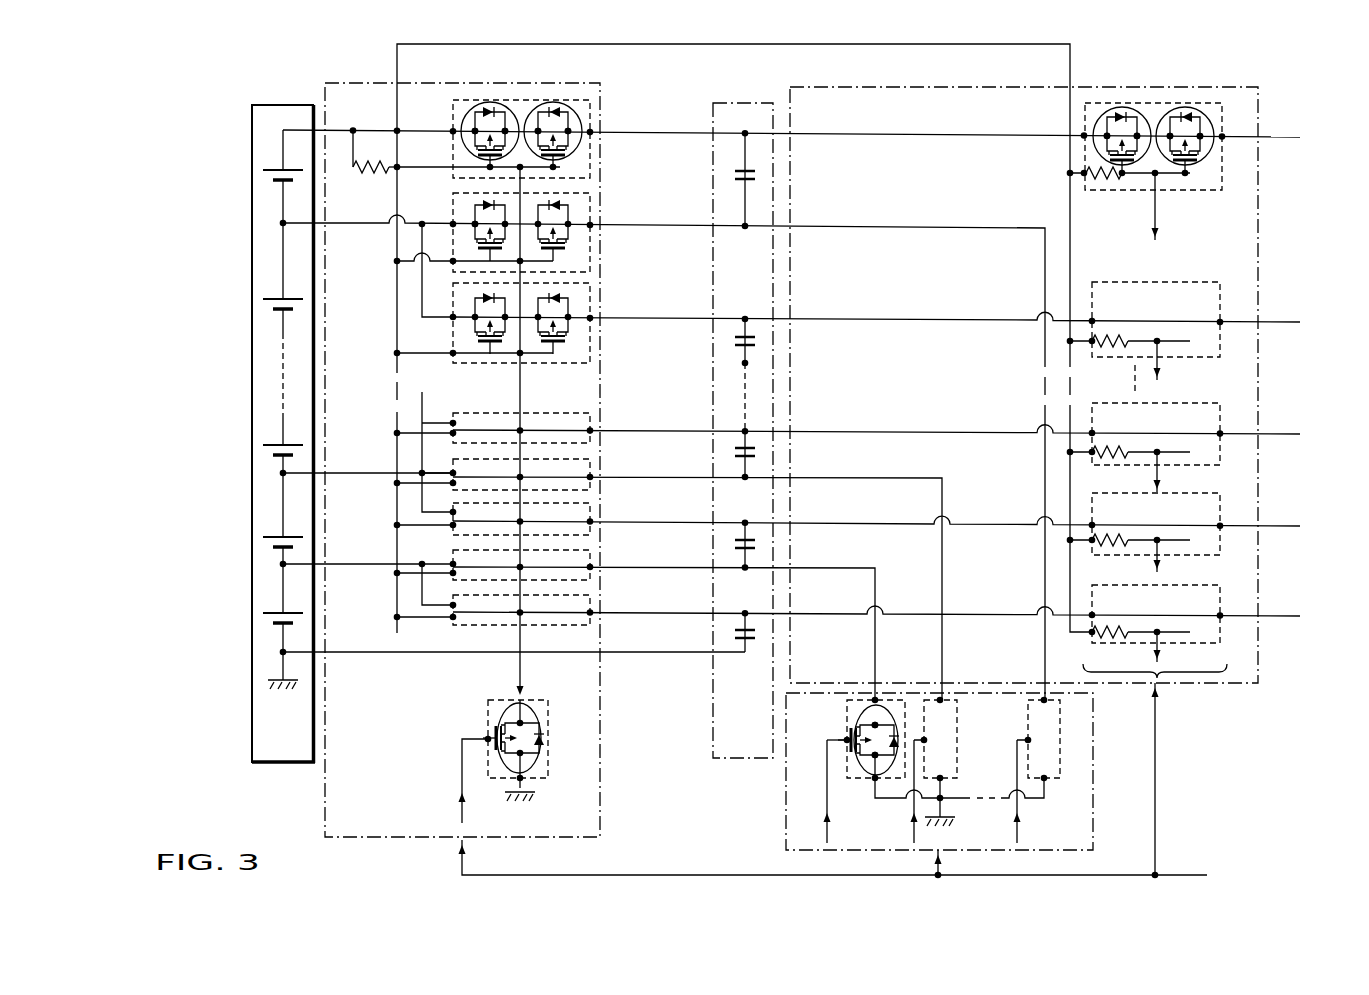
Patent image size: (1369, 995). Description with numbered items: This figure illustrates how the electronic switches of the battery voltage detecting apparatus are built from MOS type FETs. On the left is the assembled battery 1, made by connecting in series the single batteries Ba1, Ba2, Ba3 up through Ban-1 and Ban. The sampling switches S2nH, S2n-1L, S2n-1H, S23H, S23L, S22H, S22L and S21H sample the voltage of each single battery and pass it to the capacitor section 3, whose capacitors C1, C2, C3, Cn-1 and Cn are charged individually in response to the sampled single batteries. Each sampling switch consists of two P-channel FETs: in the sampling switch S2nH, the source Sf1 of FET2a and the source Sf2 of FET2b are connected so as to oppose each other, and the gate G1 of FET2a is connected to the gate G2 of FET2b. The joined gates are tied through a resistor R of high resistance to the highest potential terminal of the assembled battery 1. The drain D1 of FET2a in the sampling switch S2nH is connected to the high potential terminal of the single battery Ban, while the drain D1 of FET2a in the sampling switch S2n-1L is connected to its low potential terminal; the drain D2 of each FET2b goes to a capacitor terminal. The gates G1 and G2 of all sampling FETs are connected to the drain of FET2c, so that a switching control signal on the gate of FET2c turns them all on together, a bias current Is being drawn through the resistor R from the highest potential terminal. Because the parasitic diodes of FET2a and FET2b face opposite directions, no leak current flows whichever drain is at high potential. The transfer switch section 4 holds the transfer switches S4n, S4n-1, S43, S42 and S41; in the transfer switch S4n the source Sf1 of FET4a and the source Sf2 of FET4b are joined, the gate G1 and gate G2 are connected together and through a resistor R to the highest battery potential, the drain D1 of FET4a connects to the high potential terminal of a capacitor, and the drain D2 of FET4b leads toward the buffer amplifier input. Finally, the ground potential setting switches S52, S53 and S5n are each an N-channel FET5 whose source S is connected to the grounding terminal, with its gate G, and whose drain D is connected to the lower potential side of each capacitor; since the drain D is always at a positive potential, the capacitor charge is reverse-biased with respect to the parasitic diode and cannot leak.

The assembled battery 1 is at (250, 404).
The capacitor section 3 is at (748, 103).
The transfer switch section 4 is at (1260, 238).
The single battery Ban is at (262, 176).
The single battery Ban-1 is at (265, 304).
The single battery Ba3 is at (262, 451).
The single battery Ba2 is at (262, 543).
The single battery Ba1 is at (262, 618).
The sampling switch S2nH is at (590, 156).
The sampling switch S2n-1L is at (590, 248).
The sampling switch S2n-1H is at (590, 341).
The sampling switch S23H is at (590, 414).
The sampling switch S23L is at (590, 460).
The sampling switch S22H is at (590, 504).
The sampling switch S22L is at (590, 551).
The sampling switch S21H is at (590, 596).
The P-channel MOS type FET FET2a is at (468, 106).
The P-channel MOS type FET FET2b is at (578, 108).
The FET FET2c is at (488, 717).
The source electrode Sf1 is at (508, 126).
The source electrode Sf2 is at (540, 126).
The drain electrode D1 is at (470, 131).
The drain electrode D2 is at (583, 126).
The gate electrode G1 is at (488, 170).
The gate electrode G2 is at (556, 170).
The resistor R is at (384, 163).
The bias current Is is at (525, 673).
The capacitor Cn is at (735, 176).
The capacitor Cn-1 is at (735, 347).
The capacitor C3 is at (735, 454).
The capacitor C2 is at (735, 542).
The capacitor C1 is at (735, 632).
The transfer switch S4n is at (1222, 158).
The transfer switch S4n-1 is at (1220, 349).
The transfer switch S43 is at (1220, 460).
The transfer switch S42 is at (1220, 549).
The transfer switch S41 is at (1220, 639).
The P-channel MOS type FET FET4a is at (1100, 112).
The P-channel MOS type FET FET4b is at (1208, 112).
The N-channel MOS type FET FET5 is at (847, 772).
The drain D is at (873, 723).
The gate G is at (847, 740).
The source S is at (878, 758).
The ground potential setting switch S52 is at (858, 782).
The ground potential setting switch S53 is at (960, 782).
The ground potential setting switch S5n is at (1064, 782).